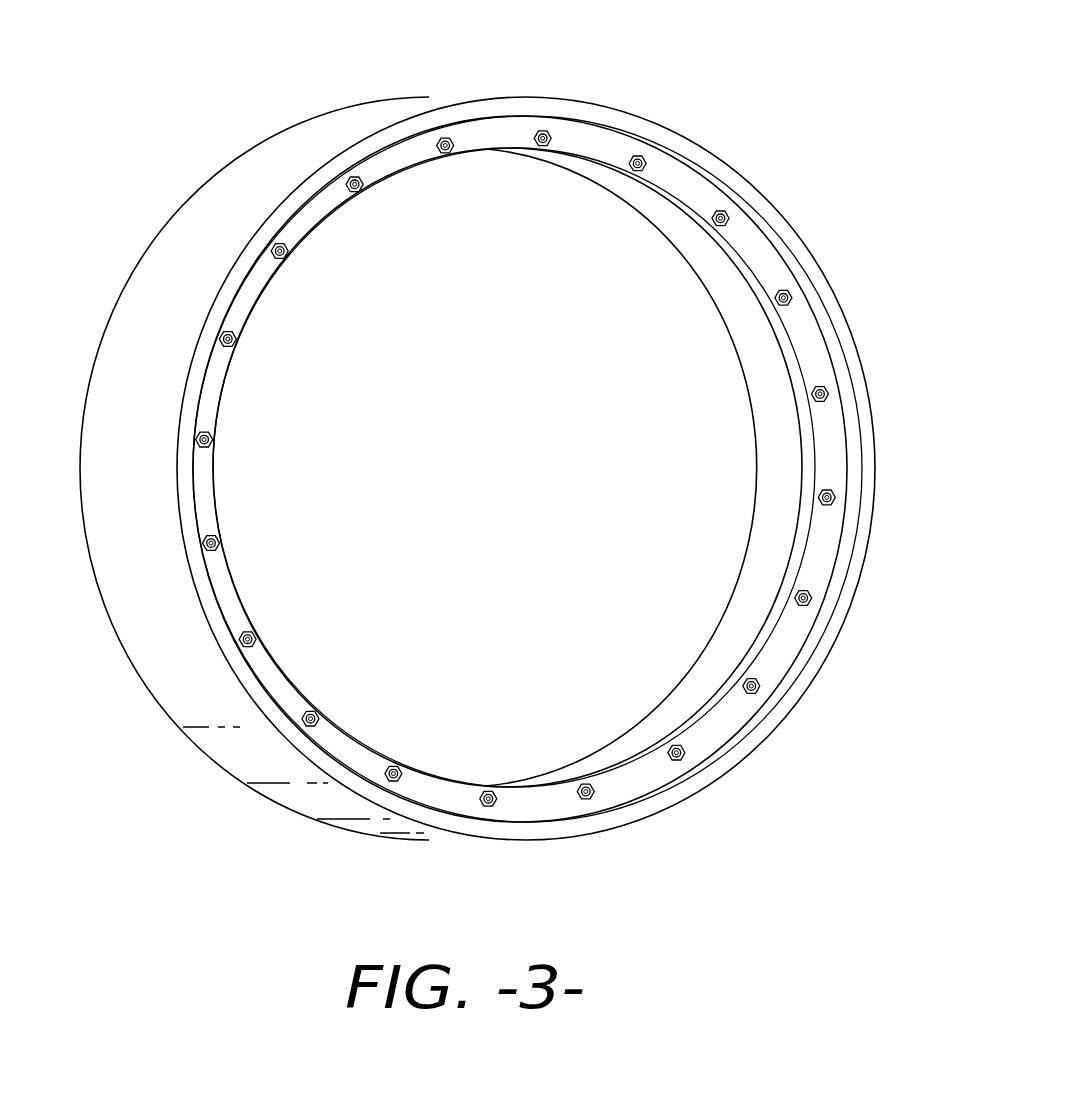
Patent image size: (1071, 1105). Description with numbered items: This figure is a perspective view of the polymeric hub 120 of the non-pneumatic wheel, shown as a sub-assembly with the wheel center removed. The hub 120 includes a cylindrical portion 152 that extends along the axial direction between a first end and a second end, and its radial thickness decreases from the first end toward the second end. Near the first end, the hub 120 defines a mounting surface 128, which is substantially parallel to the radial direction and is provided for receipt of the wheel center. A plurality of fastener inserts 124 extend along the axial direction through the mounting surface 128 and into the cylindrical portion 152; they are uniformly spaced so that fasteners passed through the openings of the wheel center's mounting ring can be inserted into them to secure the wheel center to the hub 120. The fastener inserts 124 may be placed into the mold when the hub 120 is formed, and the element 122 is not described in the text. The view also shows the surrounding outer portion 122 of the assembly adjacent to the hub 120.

The polymeric hub 120 is at (526, 426).
The wheel rim 122 is at (155, 632).
The fastener inserts 124 is at (456, 145).
The mounting surface 128 is at (316, 220).
The cylindrical portion 152 is at (358, 120).